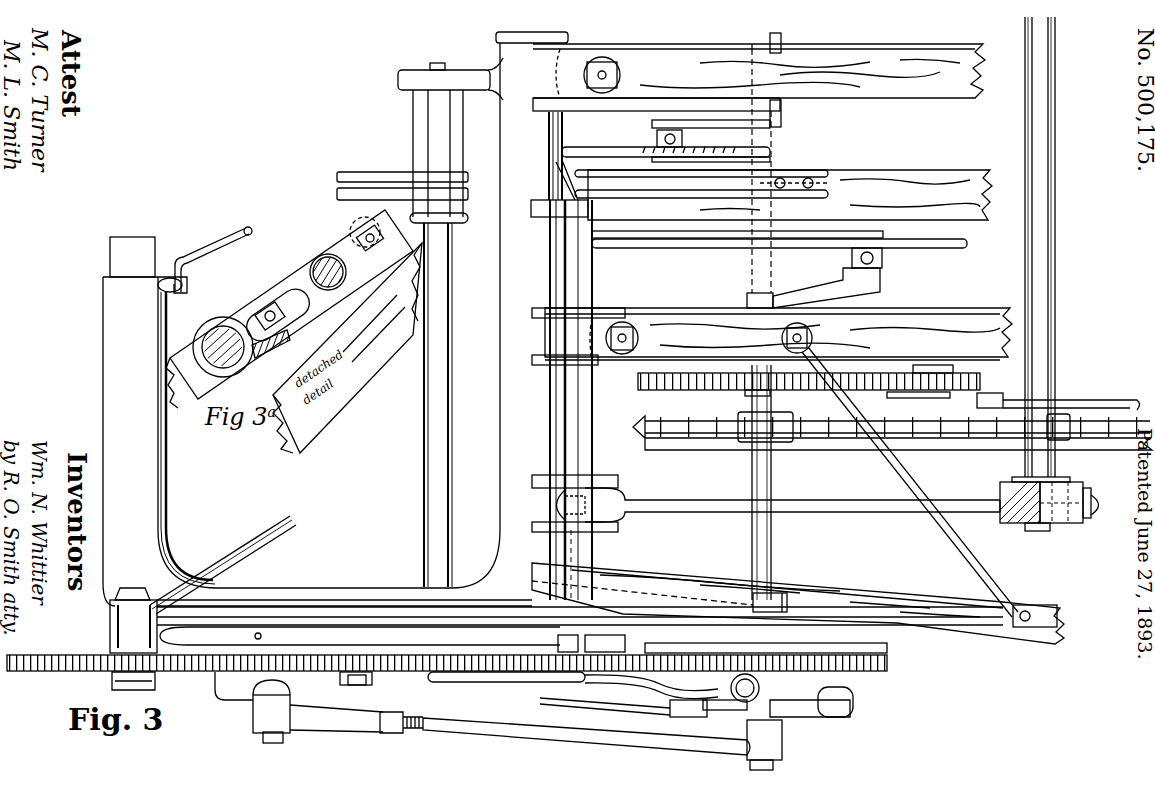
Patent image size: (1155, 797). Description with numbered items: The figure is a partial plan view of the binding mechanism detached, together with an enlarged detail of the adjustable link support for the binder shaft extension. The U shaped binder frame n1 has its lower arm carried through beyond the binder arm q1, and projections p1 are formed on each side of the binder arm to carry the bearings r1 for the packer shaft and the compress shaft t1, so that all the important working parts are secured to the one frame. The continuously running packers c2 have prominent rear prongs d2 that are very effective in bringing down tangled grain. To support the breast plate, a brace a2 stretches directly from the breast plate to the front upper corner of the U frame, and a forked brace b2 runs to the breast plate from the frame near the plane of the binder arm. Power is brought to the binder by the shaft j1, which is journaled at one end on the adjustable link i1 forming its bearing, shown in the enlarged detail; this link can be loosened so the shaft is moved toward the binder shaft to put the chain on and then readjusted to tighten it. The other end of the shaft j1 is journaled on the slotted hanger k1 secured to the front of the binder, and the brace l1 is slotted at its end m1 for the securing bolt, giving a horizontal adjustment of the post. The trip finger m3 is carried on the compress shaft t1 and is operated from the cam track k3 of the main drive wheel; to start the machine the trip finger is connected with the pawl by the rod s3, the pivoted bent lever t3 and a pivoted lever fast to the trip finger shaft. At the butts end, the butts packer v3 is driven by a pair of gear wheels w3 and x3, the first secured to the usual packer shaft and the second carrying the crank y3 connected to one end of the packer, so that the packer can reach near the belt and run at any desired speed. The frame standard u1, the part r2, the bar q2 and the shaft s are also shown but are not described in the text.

In FIG. 3, the frame standard u' u1 is at (317, 324).
In FIG. 3, the forked brace b2 is at (213, 259).
In FIG. 3, the compress shaft t1 is at (439, 338).
In FIG. 3, the bearings r1 is at (398, 78).
In FIG. 3, the pin r'' r2 is at (783, 44).
In FIG. 3, the trip finger m3 is at (370, 172).
In FIG. 3, the binder frame n1 is at (544, 316).
In FIG. 3, the binder arm q1 is at (540, 210).
In FIG. 3, the projections p1 is at (640, 45).
In FIG. 3, the packers c2 is at (688, 250).
In FIG. 3, the slotted bar q'' q2 is at (760, 185).
In FIG. 3, the rear prongs of the packers d2 is at (779, 265).
In FIG. 3, the shaft j1 is at (1034, 255).
In FIG. 3A, the shaft j1 is at (328, 268).
In FIG. 3, the gear wheel w3 is at (809, 390).
In FIG. 3, the gear wheel x3 is at (920, 387).
In FIG. 3, the crank y3 is at (1010, 395).
In FIG. 3, the butts packer v3 is at (892, 416).
In FIG. 3, the hanger k1 is at (1044, 530).
In FIG. 3, the brace l1 is at (792, 501).
In FIG. 3, the slotted end of brace m1 is at (575, 503).
In FIG. 3, the vertical shaft s is at (761, 482).
In FIG. 3, the track k3 is at (851, 488).
In FIG. 3, the brace a2 is at (556, 603).
In FIG. 3, the rod s3 is at (506, 684).
In FIG. 3, the pivoted bent lever t3 is at (649, 695).
In FIG. 3A, the adjustable link i1 is at (289, 309).